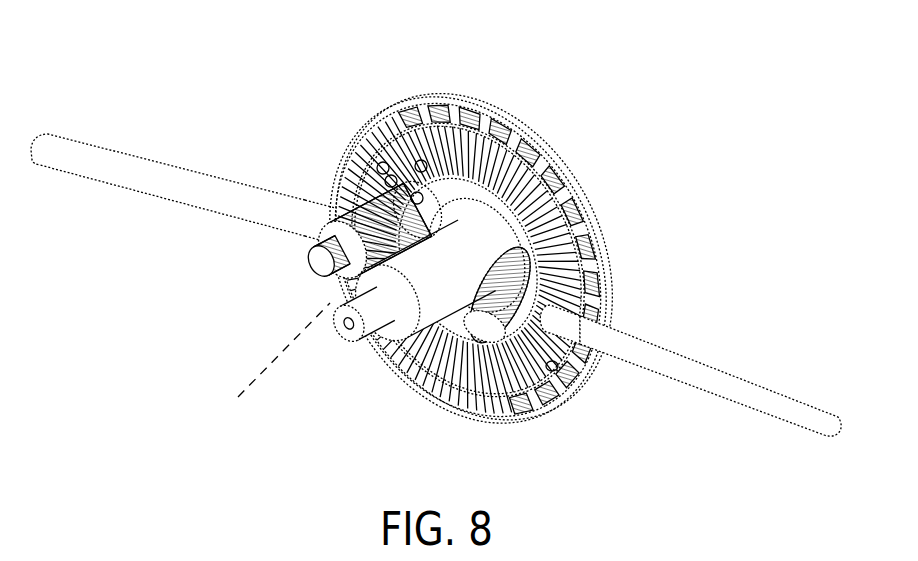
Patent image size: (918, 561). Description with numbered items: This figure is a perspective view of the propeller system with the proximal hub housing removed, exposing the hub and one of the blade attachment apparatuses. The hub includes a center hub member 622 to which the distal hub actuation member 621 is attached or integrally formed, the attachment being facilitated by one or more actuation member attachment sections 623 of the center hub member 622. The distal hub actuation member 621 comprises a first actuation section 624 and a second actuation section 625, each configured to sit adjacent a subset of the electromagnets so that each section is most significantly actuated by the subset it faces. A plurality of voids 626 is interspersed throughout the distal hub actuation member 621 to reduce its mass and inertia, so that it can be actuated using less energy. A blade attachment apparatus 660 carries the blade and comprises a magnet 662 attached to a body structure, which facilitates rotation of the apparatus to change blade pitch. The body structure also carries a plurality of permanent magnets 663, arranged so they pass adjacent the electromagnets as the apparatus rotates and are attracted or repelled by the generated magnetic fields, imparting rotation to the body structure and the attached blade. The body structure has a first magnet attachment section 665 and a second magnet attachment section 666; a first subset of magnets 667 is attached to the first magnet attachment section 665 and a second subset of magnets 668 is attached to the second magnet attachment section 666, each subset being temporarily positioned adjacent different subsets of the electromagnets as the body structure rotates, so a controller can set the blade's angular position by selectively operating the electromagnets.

The distal hub actuation member 621 is at (542, 168).
The center hub member 622 is at (460, 264).
The actuation member attachment section 623 is at (432, 237).
The first actuation section 624 is at (447, 167).
The second actuation section 625 is at (448, 112).
The voids 626 is at (450, 352).
The blade attachment apparatus 660 is at (425, 338).
The magnet 662 is at (362, 217).
The permanent magnets 663 is at (547, 250).
The first magnet attachment section 665 is at (330, 228).
The second magnet attachment section 666 is at (556, 368).
The first subset of magnets 667 is at (332, 243).
The second subset of magnets 668 is at (540, 294).